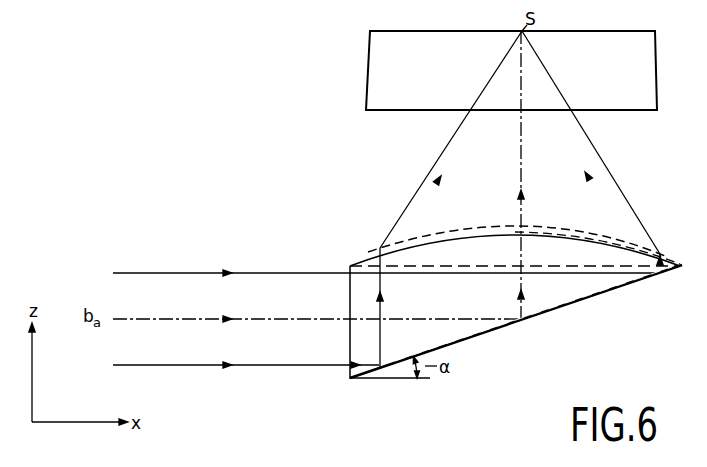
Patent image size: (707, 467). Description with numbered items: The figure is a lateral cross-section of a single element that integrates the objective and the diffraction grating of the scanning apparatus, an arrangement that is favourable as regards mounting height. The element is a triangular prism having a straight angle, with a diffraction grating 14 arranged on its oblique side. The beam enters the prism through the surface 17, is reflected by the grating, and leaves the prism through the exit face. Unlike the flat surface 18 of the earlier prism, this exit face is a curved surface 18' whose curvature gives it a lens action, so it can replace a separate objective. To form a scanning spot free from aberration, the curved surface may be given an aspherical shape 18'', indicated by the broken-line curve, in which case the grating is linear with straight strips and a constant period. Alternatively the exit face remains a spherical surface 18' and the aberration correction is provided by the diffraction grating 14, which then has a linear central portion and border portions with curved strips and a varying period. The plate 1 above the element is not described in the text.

The recording medium / focal plane 1 is at (597, 30).
The diffraction grating 14 is at (600, 283).
The entrance surface 17 is at (350, 355).
The flat exit surface 18 is at (503, 246).
The spherical curved exit surface 18' is at (597, 227).
The aspherical curved exit surface 18'' is at (516, 212).